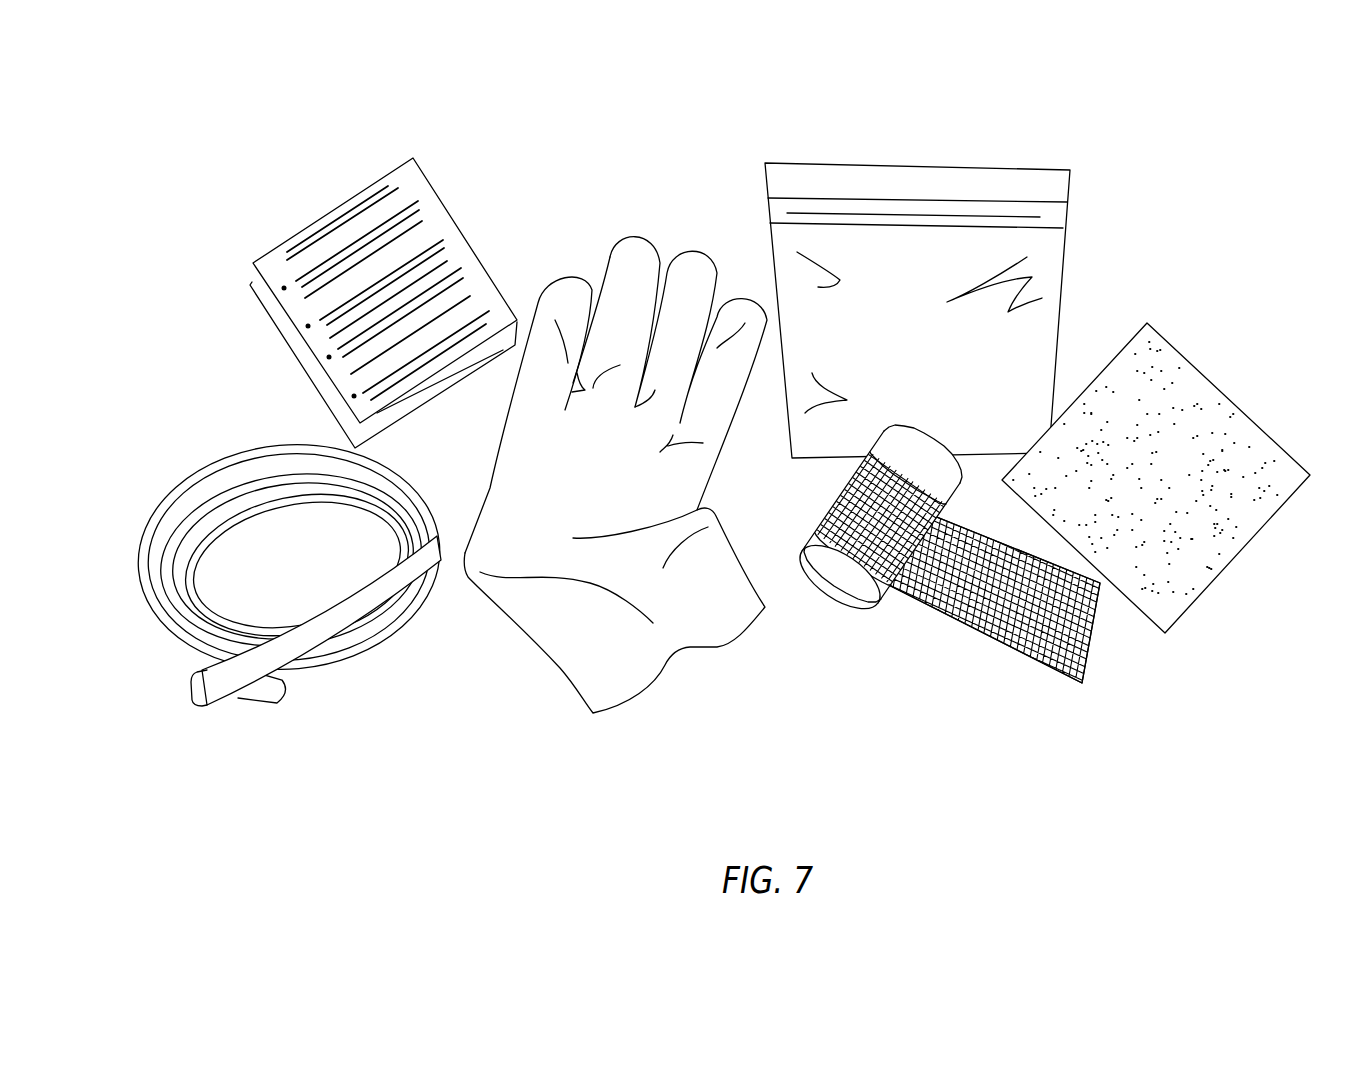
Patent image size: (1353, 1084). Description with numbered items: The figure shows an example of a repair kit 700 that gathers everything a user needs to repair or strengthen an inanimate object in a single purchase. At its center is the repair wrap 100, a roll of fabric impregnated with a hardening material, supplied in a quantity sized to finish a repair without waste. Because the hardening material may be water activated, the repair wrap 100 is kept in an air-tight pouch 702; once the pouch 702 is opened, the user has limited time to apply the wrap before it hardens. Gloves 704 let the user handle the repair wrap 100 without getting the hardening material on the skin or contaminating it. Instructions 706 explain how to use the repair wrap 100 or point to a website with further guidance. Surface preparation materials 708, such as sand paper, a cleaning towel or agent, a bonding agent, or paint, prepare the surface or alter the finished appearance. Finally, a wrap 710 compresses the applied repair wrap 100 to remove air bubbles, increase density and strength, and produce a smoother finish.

The repair kit 700 is at (218, 155).
The pouch 702 is at (905, 252).
The gloves 704 is at (630, 303).
The instructions 706 is at (373, 243).
The surface preparation materials 708 is at (1192, 570).
The wrap 710 is at (228, 680).
The repair wrap 100 is at (982, 607).